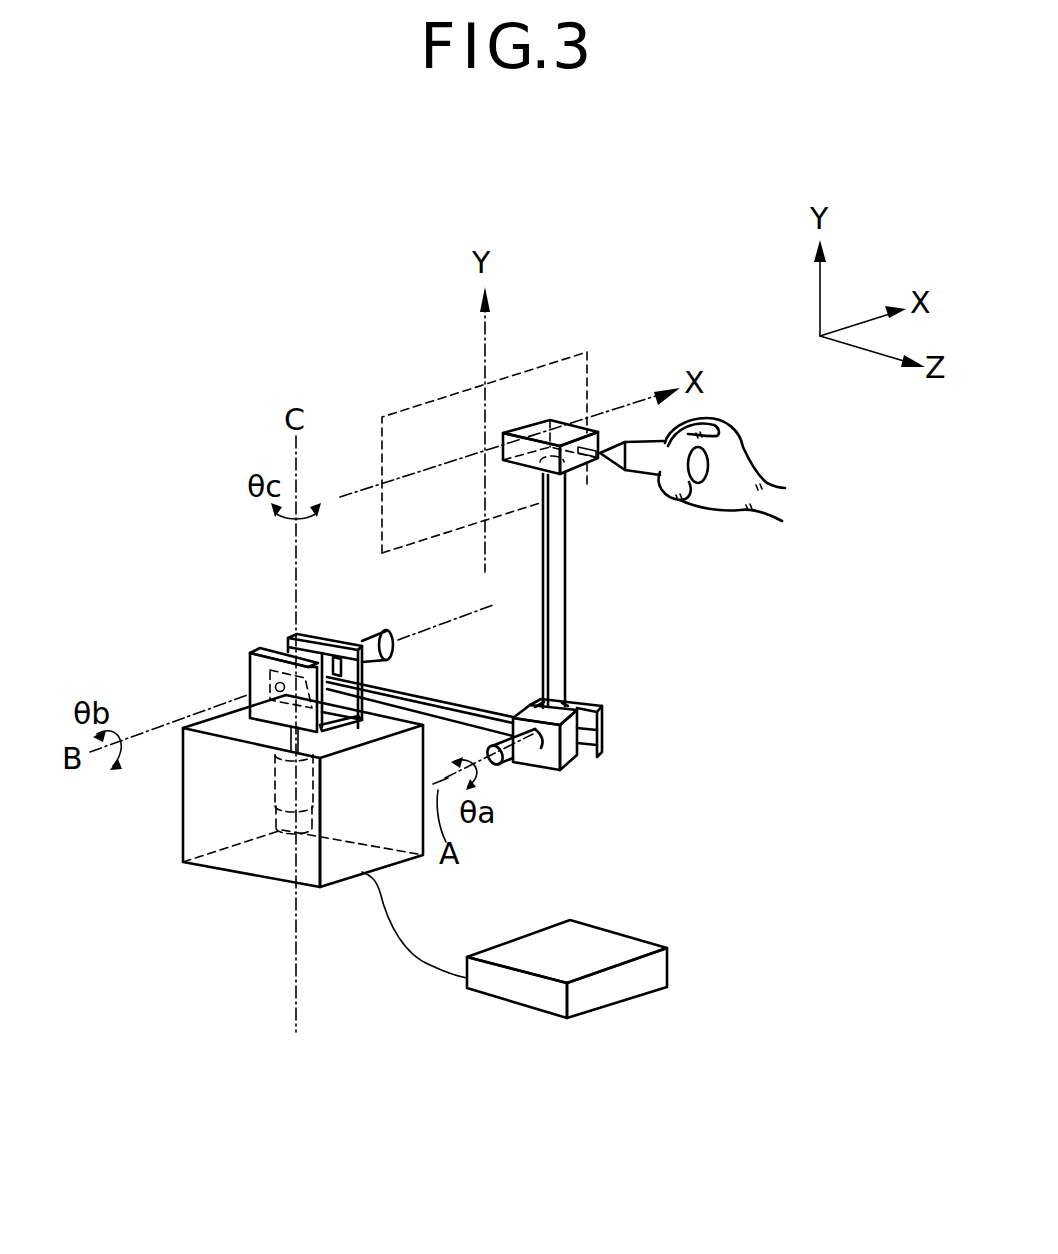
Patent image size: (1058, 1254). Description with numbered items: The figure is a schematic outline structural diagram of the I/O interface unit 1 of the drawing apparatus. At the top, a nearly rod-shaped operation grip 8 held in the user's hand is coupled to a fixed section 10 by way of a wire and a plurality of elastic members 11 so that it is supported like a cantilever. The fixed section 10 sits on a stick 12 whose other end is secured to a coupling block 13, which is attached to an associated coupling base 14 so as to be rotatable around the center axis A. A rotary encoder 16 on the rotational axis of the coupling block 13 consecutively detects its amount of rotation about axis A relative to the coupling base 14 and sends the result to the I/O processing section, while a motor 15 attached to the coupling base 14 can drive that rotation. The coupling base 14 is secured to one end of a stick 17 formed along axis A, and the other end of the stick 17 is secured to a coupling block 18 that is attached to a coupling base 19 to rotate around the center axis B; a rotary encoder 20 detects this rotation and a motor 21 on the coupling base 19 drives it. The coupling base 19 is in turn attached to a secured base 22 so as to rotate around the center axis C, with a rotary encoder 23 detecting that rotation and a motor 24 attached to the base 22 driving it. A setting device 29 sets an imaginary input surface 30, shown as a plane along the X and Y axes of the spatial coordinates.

The I/O interface unit 1 is at (198, 501).
The operation grip 8 is at (642, 450).
The fixed section 10 is at (570, 423).
The elastic members 11 is at (585, 457).
The stick 12 is at (561, 563).
The coupling block 13 is at (578, 738).
The coupling base 14 is at (600, 727).
The motor 15 is at (534, 744).
The rotary encoder 16 is at (514, 767).
The stick 17 is at (457, 713).
The coupling block 18 is at (334, 670).
The coupling base 19 is at (262, 676).
The rotary encoder 20 is at (387, 638).
The motor 21 is at (348, 642).
The secured base 22 is at (193, 818).
The rotary encoder 23 is at (275, 822).
The motor 24 is at (275, 785).
The setting device 29 is at (530, 1002).
The imaginary input surface 30 is at (523, 370).